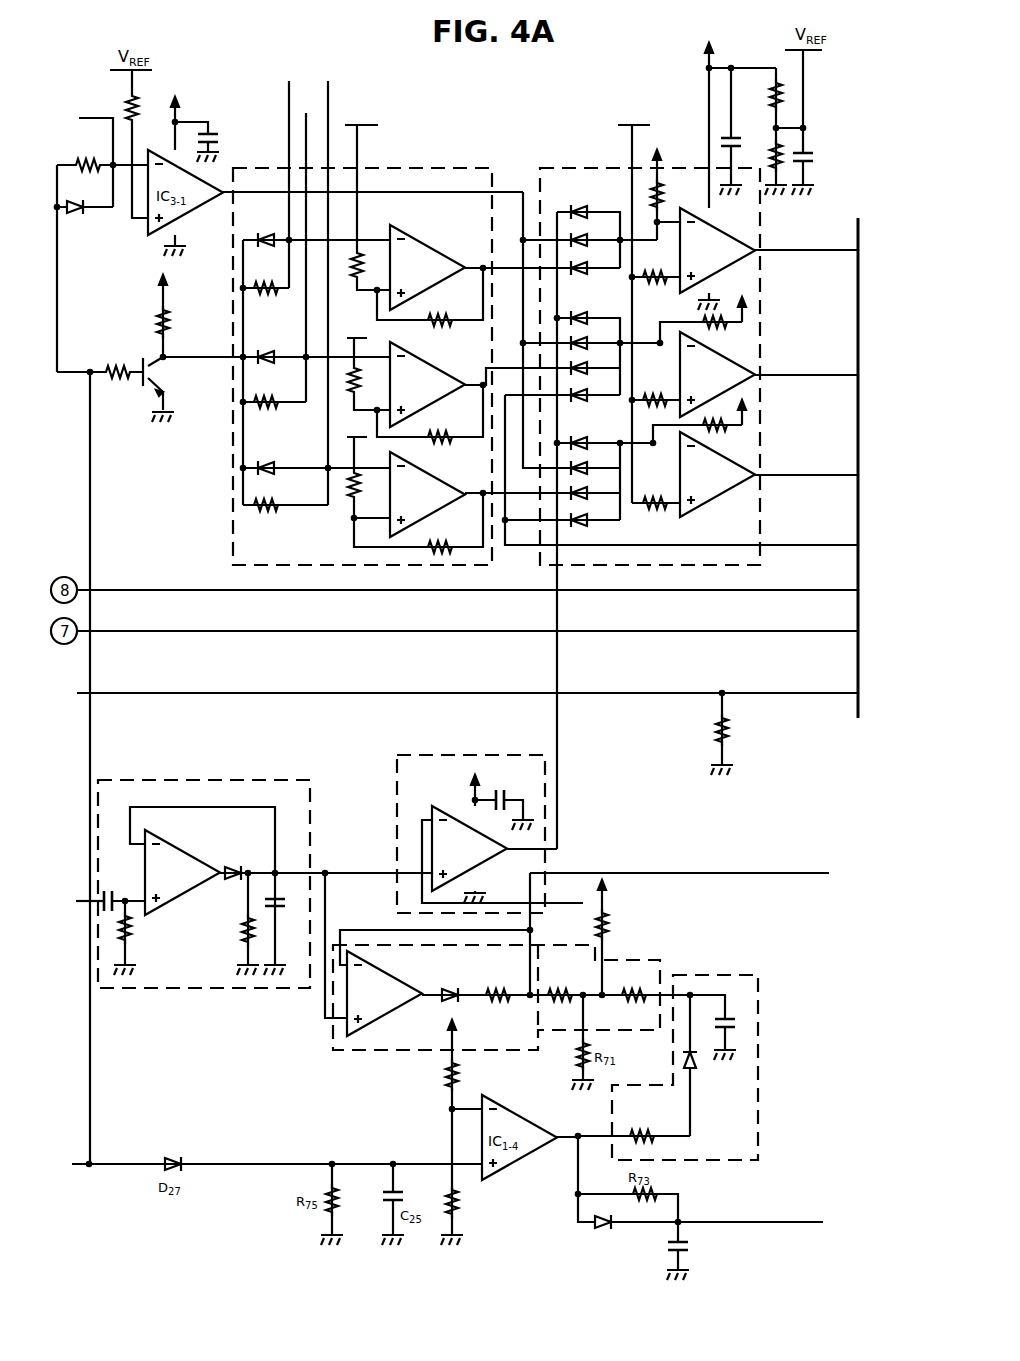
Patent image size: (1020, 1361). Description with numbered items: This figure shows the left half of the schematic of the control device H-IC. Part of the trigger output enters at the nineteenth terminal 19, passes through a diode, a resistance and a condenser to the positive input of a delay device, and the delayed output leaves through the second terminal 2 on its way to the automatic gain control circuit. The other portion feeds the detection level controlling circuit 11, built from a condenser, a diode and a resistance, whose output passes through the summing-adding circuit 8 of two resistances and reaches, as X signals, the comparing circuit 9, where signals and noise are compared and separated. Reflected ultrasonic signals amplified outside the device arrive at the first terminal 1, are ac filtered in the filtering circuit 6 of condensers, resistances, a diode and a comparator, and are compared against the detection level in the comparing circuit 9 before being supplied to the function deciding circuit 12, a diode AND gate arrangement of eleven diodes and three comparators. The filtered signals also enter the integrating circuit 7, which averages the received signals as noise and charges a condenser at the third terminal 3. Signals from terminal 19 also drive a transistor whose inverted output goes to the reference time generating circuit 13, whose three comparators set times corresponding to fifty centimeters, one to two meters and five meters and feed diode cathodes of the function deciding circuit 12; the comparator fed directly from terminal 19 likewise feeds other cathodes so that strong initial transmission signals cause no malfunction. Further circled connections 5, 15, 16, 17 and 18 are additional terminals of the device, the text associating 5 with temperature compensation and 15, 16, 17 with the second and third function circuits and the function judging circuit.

The first terminal 1 is at (77, 901).
The second terminal 2 is at (763, 1222).
The third terminal 3 is at (692, 873).
The temperature compensating circuit 5 is at (454, 693).
The wave filtering circuit 6 is at (205, 778).
The integrating circuit 7 is at (333, 1040).
The summing-adding circuit 8 is at (648, 960).
The comparing circuit 9 is at (455, 757).
The detection level controlling circuit 11 is at (760, 1068).
The function deciding circuit 12 is at (577, 168).
The reference time generating circuit 13 is at (236, 466).
The second function circuit 15 is at (328, 280).
The third function circuit 16 is at (306, 244).
The first and second function judging circuit 17 is at (289, 171).
The terminal 18 is at (83, 135).
The 19th terminal 19 is at (103, 1164).